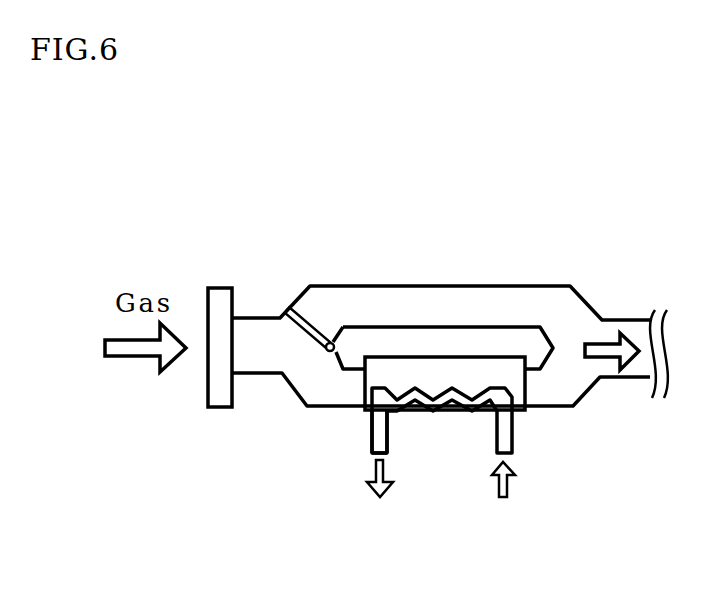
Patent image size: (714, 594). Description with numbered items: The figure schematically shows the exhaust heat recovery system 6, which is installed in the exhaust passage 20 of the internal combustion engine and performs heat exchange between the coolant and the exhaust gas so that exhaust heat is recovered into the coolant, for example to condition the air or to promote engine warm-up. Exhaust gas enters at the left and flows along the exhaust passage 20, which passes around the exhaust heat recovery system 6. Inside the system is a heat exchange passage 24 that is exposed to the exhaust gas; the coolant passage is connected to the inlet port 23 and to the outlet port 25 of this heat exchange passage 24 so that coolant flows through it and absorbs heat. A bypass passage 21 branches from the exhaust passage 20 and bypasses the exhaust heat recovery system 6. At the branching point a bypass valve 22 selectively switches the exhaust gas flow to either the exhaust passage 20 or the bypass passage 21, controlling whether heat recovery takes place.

The exhaust heat recovery system 6 is at (466, 457).
The exhaust passage 20 is at (329, 392).
The bypass passage 21 is at (482, 295).
The bypass valve 22 is at (312, 320).
The inlet port 23 is at (505, 432).
The heat exchange passage 24 is at (443, 398).
The outlet port 25 is at (377, 433).